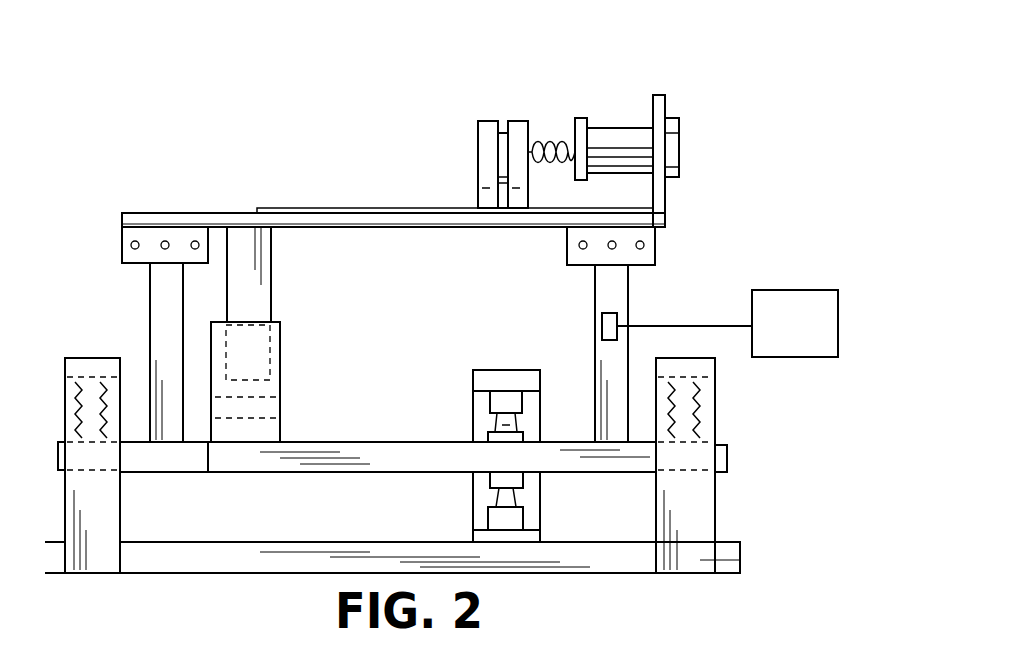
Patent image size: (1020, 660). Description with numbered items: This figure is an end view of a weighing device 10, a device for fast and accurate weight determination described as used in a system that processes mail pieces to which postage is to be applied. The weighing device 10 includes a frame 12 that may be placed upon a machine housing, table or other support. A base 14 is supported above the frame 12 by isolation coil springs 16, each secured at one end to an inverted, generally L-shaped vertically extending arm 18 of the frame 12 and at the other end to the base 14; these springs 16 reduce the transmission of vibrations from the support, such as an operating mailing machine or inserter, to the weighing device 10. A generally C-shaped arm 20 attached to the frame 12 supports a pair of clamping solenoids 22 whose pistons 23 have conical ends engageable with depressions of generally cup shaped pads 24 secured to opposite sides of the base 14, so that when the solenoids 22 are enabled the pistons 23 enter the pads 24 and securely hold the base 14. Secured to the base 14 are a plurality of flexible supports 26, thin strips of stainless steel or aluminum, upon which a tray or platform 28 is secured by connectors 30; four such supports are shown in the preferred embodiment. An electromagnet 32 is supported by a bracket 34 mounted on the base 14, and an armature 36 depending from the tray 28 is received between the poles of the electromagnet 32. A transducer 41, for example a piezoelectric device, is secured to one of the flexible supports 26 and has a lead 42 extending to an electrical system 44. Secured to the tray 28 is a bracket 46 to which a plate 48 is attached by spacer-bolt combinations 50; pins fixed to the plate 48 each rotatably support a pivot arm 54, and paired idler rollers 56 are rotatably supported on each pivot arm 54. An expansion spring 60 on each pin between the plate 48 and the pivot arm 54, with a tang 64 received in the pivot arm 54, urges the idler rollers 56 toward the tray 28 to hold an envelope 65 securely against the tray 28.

The weighing device 10 is at (303, 118).
The frame 12 is at (352, 541).
The base 14 is at (366, 441).
The isolation coil springs 16 is at (70, 400).
The L-shaped vertically extending arms 18 is at (122, 515).
The C-shaped arm 20 is at (473, 396).
The clamping solenoids 22 is at (523, 400).
The pistons 23 is at (497, 422).
The cup shaped pads 24 is at (490, 437).
The flexible supports 26 is at (150, 300).
The tray 28 is at (160, 212).
The connectors 30 is at (705, 220).
The electromagnet 32 is at (282, 398).
The bracket 34 is at (283, 432).
The armature 36 is at (271, 298).
The transducer 41 is at (602, 328).
The lead 42 is at (710, 326).
The electrical system 44 is at (820, 290).
The bracket 46 is at (660, 95).
The plate 48 is at (583, 118).
The spacer-bolt combinations 50 is at (625, 128).
The pivot arm 54 is at (503, 132).
The idler rollers 56 is at (485, 182).
The expansion spring 60 is at (541, 138).
The tang 64 is at (563, 133).
The envelope 65 is at (312, 207).